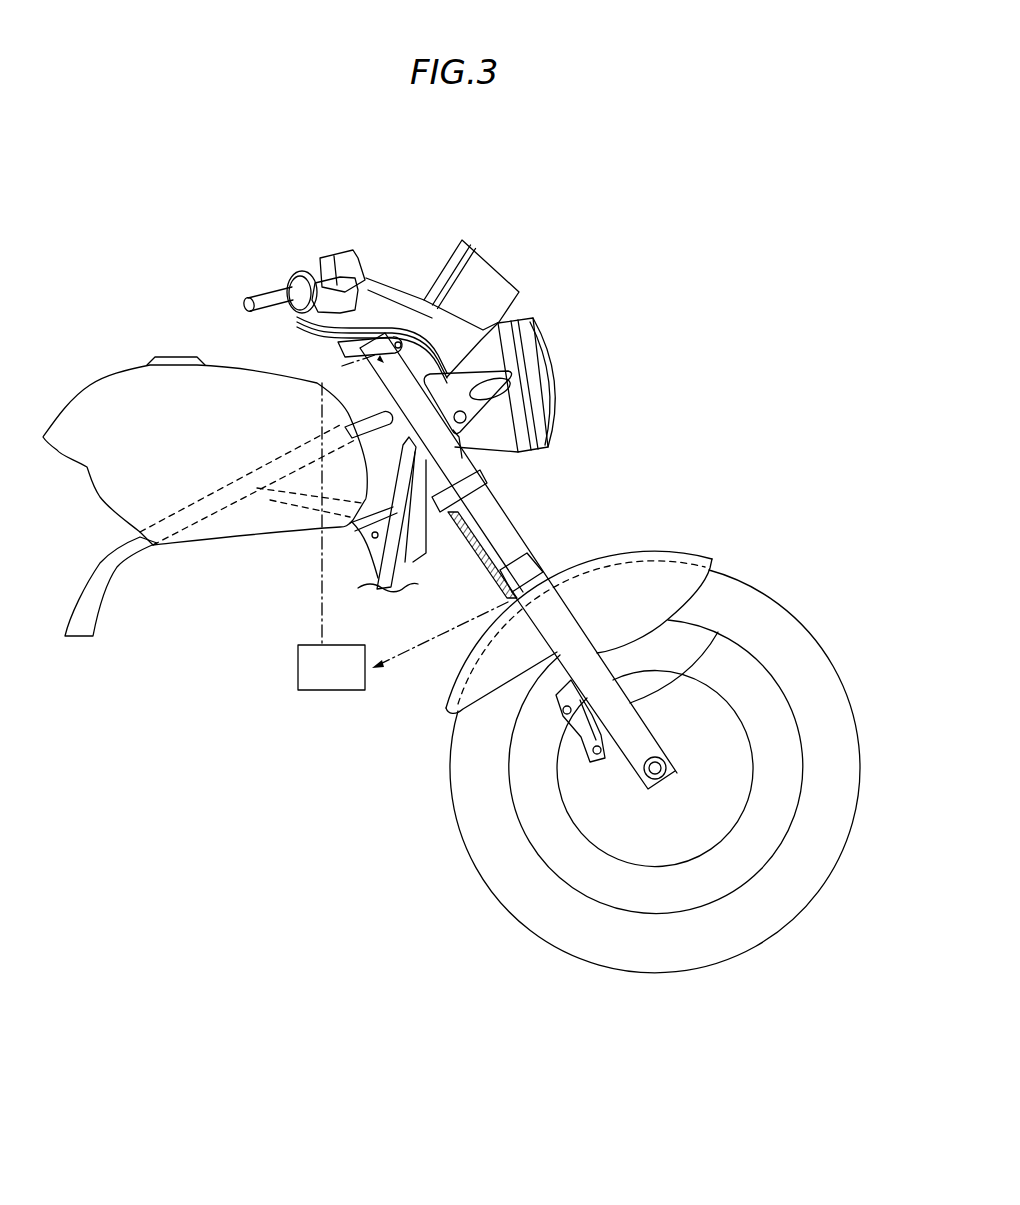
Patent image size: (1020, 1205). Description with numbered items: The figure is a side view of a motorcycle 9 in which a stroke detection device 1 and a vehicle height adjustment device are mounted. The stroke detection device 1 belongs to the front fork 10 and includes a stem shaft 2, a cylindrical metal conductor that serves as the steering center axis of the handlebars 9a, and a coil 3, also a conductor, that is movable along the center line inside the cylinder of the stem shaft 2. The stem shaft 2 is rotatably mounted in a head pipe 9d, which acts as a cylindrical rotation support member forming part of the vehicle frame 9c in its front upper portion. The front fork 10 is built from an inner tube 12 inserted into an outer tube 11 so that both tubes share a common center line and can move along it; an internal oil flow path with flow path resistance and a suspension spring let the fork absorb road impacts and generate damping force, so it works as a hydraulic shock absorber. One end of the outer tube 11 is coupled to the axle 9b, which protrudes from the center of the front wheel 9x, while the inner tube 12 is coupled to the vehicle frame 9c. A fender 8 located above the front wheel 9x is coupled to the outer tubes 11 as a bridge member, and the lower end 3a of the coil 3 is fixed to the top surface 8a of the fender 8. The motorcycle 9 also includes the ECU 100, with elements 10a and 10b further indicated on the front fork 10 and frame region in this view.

The stroke detection device 1 is at (457, 590).
The stem shaft 2 is at (386, 432).
The coil 3 is at (497, 574).
The lower end 3a is at (510, 598).
The fender 8 is at (575, 611).
The top surface 8a is at (484, 622).
The motorcycle 9 is at (542, 315).
The handlebars 9a is at (301, 268).
The axle 9b is at (645, 770).
The vehicle frame 9c is at (110, 607).
The head pipe 9d is at (392, 446).
The front wheel 9x is at (620, 957).
The front fork 10 is at (526, 539).
The fork clamp 10a is at (465, 540).
The fuel tank 10b is at (338, 375).
The outer tube 11 is at (718, 632).
The inner tube 12 is at (505, 516).
The ECU 100 is at (335, 691).